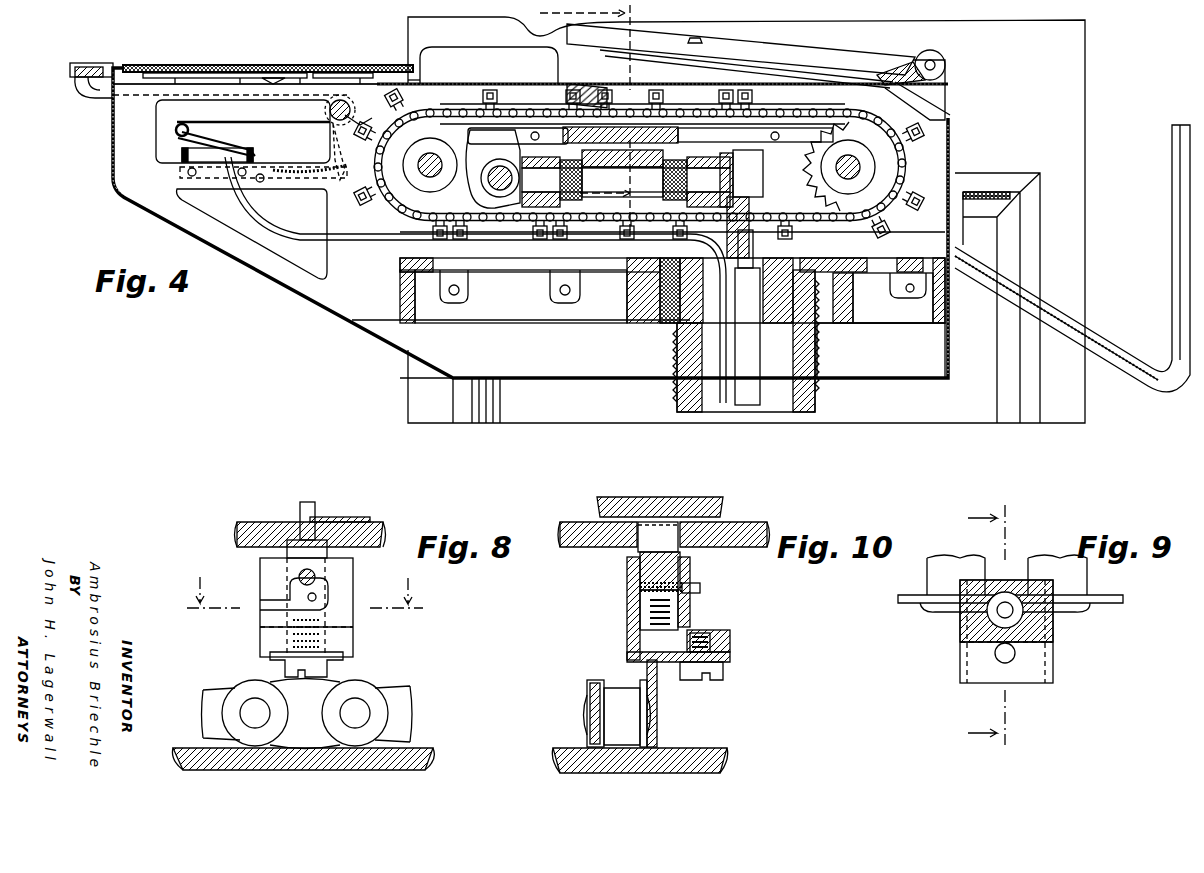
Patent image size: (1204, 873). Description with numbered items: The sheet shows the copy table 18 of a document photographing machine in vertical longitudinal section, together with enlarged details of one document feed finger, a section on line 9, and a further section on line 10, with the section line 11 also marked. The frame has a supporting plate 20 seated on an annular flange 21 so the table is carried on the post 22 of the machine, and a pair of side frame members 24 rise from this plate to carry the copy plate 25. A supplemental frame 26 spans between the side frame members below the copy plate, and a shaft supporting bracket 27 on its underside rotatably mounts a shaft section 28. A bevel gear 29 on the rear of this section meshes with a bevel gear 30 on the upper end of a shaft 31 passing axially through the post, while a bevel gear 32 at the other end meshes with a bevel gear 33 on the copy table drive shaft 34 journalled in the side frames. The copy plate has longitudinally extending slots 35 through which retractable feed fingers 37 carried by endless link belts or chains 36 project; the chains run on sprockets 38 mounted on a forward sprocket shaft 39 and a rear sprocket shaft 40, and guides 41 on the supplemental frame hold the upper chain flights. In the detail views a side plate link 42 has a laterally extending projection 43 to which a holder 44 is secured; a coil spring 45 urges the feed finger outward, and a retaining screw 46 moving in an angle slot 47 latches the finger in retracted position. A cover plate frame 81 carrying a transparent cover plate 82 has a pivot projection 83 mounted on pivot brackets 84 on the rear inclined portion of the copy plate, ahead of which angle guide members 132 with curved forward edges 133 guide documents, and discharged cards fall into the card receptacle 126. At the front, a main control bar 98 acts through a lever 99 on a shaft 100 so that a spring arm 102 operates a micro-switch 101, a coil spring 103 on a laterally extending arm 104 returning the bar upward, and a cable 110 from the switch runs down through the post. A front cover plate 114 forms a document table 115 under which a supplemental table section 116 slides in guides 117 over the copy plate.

In FIG. 4, the section line 11 is at (576, 117).
In FIG. 4, the copy table 18 is at (307, 66).
In FIG. 4, the supporting plate 20 is at (398, 280).
In FIG. 4, the annular flange 21 is at (855, 308).
In FIG. 4, the post 22 is at (815, 398).
In FIG. 4, the side frame members 24 is at (345, 312).
In FIG. 4, the copy plate 25 is at (436, 82).
In FIG. 8, the copy plate 25 is at (368, 550).
In FIG. 10, the copy plate 25 is at (752, 522).
In FIG. 4, the supplemental frame 26 is at (688, 136).
In FIG. 4, the shaft supporting bracket 27 is at (665, 152).
In FIG. 4, the shaft section 28 is at (626, 182).
In FIG. 4, the bevel gear 29 is at (738, 160).
In FIG. 4, the bevel gear 30 is at (742, 176).
In FIG. 4, the shaft 31 is at (762, 372).
In FIG. 4, the bevel gear 32 is at (518, 137).
In FIG. 4, the bevel gear 33 is at (352, 118).
In FIG. 4, the copy table drive shaft 34 is at (481, 169).
In FIG. 8, the longitudinally extending slots 35 is at (378, 522).
In FIG. 10, the longitudinally extending slots 35 is at (630, 550).
In FIG. 4, the endless link belts or chains 36 is at (545, 106).
In FIG. 8, the endless link belts or chains 36 is at (410, 698).
In FIG. 10, the endless link belts or chains 36 is at (617, 713).
In FIG. 9, the endless link belts or chains 36 is at (915, 595).
In FIG. 4, the retractable feed fingers 37 is at (604, 86).
In FIG. 8, the retractable feed fingers 37 is at (290, 537).
In FIG. 10, the retractable feed fingers 37 is at (658, 537).
In FIG. 9, the retractable feed fingers 37 is at (985, 624).
In FIG. 4, the sprockets 38 is at (400, 210).
In FIG. 4, the sprocket shaft 39 is at (428, 172).
In FIG. 4, the sprocket shaft 40 is at (852, 180).
In FIG. 8, the guides 41 is at (318, 760).
In FIG. 10, the guides 41 is at (665, 752).
In FIG. 4, the side plate link 42 is at (430, 157).
In FIG. 8, the side plate link 42 is at (360, 685).
In FIG. 10, the side plate link 42 is at (660, 695).
In FIG. 9, the side plate link 42 is at (928, 608).
In FIG. 8, the laterally extending projection 43 is at (345, 652).
In FIG. 10, the laterally extending projection 43 is at (672, 670).
In FIG. 4, the holder 44 is at (472, 100).
In FIG. 8, the holder 44 is at (262, 638).
In FIG. 10, the holder 44 is at (627, 602).
In FIG. 9, the holder 44 is at (1053, 628).
In FIG. 10, the coil spring 45 is at (628, 645).
In FIG. 8, the retaining screw 46 is at (298, 574).
In FIG. 10, the retaining screw 46 is at (697, 585).
In FIG. 8, the angle slot 47 is at (312, 597).
In FIG. 10, the angle slot 47 is at (692, 608).
In FIG. 9, the angle slot 47 is at (972, 650).
In FIG. 4, the cover plate frame 81 is at (845, 58).
In FIG. 4, the transparent cover plate 82 is at (702, 66).
In FIG. 10, the transparent cover plate 82 is at (725, 502).
In FIG. 4, the pivot projection 83 is at (938, 58).
In FIG. 4, the pivot brackets 84 is at (950, 92).
In FIG. 4, the main control bar 98 is at (95, 65).
In FIG. 4, the lever 99 is at (305, 116).
In FIG. 4, the shaft 100 is at (332, 110).
In FIG. 4, the micro-switch 101 is at (217, 155).
In FIG. 4, the spring arm 102 is at (225, 140).
In FIG. 4, the coil spring 103 is at (292, 188).
In FIG. 4, the laterally extending arm 104 is at (316, 176).
In FIG. 4, the cable 110 is at (293, 240).
In FIG. 4, the front cover plate 114 is at (296, 282).
In FIG. 4, the document table 115 is at (240, 58).
In FIG. 4, the supplemental table section 116 is at (128, 70).
In FIG. 4, the guides 117 is at (274, 68).
In FIG. 4, the card receptacle 126 is at (1168, 288).
In FIG. 4, the angle guide members 132 is at (489, 65).
In FIG. 4, the curved forward edges 133 is at (420, 77).
In FIG. 8, the section line 9 is at (305, 592).
In FIG. 9, the section line 10 is at (974, 625).